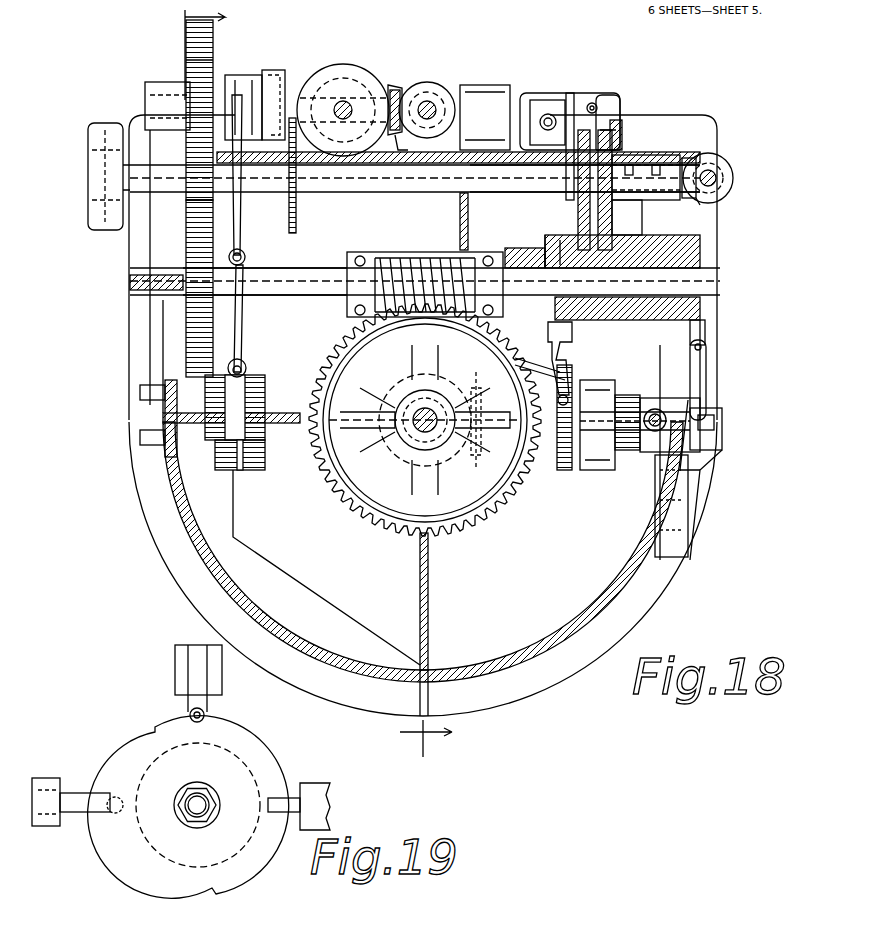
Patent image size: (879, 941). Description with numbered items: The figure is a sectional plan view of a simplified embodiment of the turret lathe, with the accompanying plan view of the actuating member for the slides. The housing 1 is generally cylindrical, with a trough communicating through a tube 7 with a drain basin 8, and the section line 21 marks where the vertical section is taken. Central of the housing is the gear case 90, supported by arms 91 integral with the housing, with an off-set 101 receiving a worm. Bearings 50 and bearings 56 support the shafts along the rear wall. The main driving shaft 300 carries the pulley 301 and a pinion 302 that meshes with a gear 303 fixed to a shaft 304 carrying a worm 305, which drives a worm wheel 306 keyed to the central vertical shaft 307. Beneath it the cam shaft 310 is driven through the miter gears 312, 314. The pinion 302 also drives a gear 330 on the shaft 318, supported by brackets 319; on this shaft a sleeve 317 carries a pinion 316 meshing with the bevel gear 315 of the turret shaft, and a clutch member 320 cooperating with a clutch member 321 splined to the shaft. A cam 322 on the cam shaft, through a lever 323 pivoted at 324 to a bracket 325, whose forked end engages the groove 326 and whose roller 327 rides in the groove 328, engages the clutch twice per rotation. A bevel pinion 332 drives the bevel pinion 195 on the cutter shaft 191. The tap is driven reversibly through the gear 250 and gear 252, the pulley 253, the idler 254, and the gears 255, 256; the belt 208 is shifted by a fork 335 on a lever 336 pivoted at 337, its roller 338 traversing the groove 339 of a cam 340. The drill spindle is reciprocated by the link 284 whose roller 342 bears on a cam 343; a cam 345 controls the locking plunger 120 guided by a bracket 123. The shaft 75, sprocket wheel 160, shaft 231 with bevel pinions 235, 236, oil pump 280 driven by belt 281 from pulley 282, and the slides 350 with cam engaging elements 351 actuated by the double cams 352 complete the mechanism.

In FIG. 18, the housing 1 is at (535, 640).
In FIG. 18, the tube 7 is at (598, 108).
In FIG. 18, the drain basin 8 is at (623, 142).
In FIG. 18, the section line 21 is at (288, 396).
In FIG. 18, the bearings 50 is at (640, 200).
In FIG. 18, the bearings 56 is at (165, 305).
In FIG. 18, the shaft 75 is at (515, 252).
In FIG. 18, the gear case 90 is at (455, 530).
In FIG. 18, the arms 91 is at (460, 205).
In FIG. 18, the off-set 101 is at (392, 243).
In FIG. 18, the plunger 120 is at (660, 420).
In FIG. 18, the bracket 123 is at (688, 510).
In FIG. 18, the sprocket wheel 160 is at (298, 215).
In FIG. 18, the cutter shaft 191 is at (432, 105).
In FIG. 18, the bevel pinion 195 is at (430, 82).
In FIG. 18, the pulley 208 is at (555, 232).
In FIG. 18, the shaft 231 is at (712, 172).
In FIG. 18, the bevel pinion 235 is at (733, 178).
In FIG. 18, the bevel pinion 236 is at (700, 205).
In FIG. 18, the gear 250 is at (600, 248).
In FIG. 18, the gear 252 is at (598, 225).
In FIG. 18, the pulley 253 is at (578, 225).
In FIG. 18, the idler 254 is at (612, 232).
In FIG. 18, the gear 255 is at (625, 120).
In FIG. 18, the gear 256 is at (610, 100).
In FIG. 18, the oil pump 280 is at (555, 100).
In FIG. 18, the belt 281 is at (575, 100).
In FIG. 18, the pulley 282 is at (585, 178).
In FIG. 18, the distributing pipe 284 is at (706, 378).
In FIG. 18, the main driving shaft 300 is at (325, 178).
In FIG. 18, the pulley 301 is at (100, 232).
In FIG. 18, the pinion 302 is at (215, 205).
In FIG. 18, the gear 303 is at (210, 325).
In FIG. 18, the shaft 304 is at (312, 290).
In FIG. 18, the worm 305 is at (420, 258).
In FIG. 18, the worm wheel 306 is at (465, 345).
In FIG. 18, the central vertical shaft 307 is at (410, 430).
In FIG. 19, the central vertical shaft 307 is at (193, 815).
In FIG. 18, the cam shaft 310 is at (615, 430).
In FIG. 18, the miter gear 312 is at (425, 452).
In FIG. 18, the miter gear 314 is at (493, 421).
In FIG. 18, the bevel gear 315 is at (372, 76).
In FIG. 18, the pinion 316 is at (393, 85).
In FIG. 18, the sleeve 317 is at (325, 88).
In FIG. 18, the shaft 318 is at (485, 86).
In FIG. 18, the brackets 319 is at (152, 88).
In FIG. 18, the clutch member 320 is at (272, 70).
In FIG. 18, the clutch member 321 is at (238, 78).
In FIG. 18, the cam 322 is at (255, 385).
In FIG. 18, the lever 323 is at (243, 312).
In FIG. 18, the pivot 324 is at (246, 257).
In FIG. 18, the bracket 325 is at (242, 236).
In FIG. 18, the groove 326 is at (200, 55).
In FIG. 18, the roller 327 is at (246, 366).
In FIG. 18, the groove 328 is at (237, 470).
In FIG. 18, the gear 330 is at (205, 40).
In FIG. 18, the bevel pinion 332 is at (417, 145).
In FIG. 18, the fork 335 is at (548, 330).
In FIG. 18, the lever 336 is at (570, 375).
In FIG. 18, the pivot 337 is at (572, 356).
In FIG. 18, the roller 338 is at (600, 392).
In FIG. 18, the groove 339 is at (563, 470).
In FIG. 18, the cam 340 is at (602, 412).
In FIG. 18, the roller 342 is at (722, 430).
In FIG. 18, the cam 343 is at (710, 470).
In FIG. 18, the cam 345 is at (655, 452).
In FIG. 19, the slides 350 is at (210, 700).
In FIG. 19, the cam engaging element 351 is at (188, 715).
In FIG. 19, the cam 352 is at (235, 885).